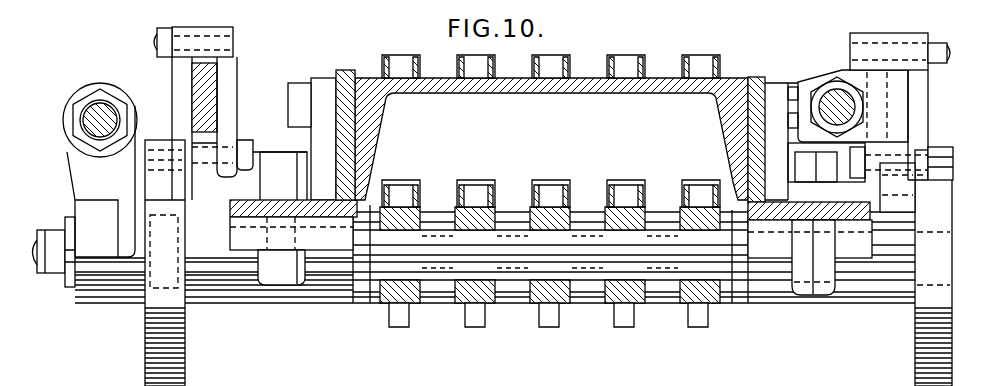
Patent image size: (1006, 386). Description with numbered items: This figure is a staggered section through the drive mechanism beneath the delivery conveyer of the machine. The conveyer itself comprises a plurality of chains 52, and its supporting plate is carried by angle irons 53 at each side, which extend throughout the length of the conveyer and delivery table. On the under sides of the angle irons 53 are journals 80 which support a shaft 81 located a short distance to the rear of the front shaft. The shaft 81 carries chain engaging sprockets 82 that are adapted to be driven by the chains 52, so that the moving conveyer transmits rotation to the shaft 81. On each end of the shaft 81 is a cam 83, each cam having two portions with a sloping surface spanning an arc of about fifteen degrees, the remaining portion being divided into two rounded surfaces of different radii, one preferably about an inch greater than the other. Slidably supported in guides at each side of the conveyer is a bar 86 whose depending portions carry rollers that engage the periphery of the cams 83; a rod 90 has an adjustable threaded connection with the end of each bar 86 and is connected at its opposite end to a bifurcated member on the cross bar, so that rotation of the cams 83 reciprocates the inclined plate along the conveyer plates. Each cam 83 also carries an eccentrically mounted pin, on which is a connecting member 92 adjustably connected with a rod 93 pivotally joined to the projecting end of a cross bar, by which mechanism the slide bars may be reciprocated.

The chains 52 is at (565, 62).
The angle irons 53 is at (343, 69).
The journals 80 is at (322, 293).
The shaft 81 is at (32, 265).
The chain engaging sprockets 82 is at (623, 323).
The cam 83 is at (143, 347).
The bar 86 is at (207, 85).
The rod 90 is at (858, 107).
The connecting members 92 is at (133, 102).
The rods 93 is at (83, 118).